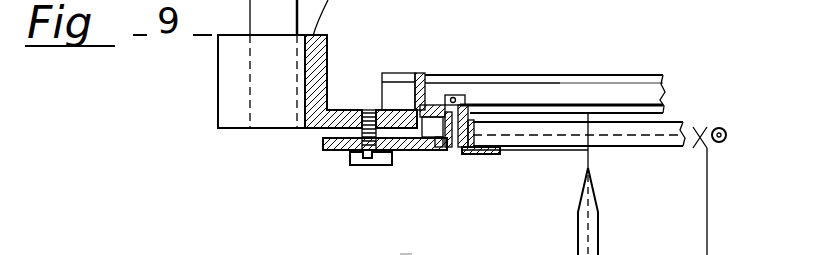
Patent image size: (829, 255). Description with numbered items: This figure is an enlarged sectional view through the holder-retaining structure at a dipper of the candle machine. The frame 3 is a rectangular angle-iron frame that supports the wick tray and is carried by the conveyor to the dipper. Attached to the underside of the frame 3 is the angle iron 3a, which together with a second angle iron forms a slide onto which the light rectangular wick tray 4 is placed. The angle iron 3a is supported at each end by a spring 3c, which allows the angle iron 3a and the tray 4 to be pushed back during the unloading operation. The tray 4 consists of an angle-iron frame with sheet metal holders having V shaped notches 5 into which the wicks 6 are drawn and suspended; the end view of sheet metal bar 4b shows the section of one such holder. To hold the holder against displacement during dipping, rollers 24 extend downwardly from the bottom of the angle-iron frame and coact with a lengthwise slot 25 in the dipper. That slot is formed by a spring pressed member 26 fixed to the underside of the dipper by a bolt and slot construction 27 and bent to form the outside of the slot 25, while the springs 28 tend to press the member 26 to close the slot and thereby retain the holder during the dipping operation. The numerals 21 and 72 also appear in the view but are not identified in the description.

The frame 3 is at (417, 74).
The angle iron 3a is at (498, 111).
The spring 3c is at (478, 103).
The wick tray 4 is at (513, 142).
The end view of sheet metal bar 4b is at (698, 148).
The V shaped notches 5 is at (600, 122).
The wicks 6 is at (707, 240).
The block 21 is at (387, 92).
The rollers 24 is at (442, 144).
The lengthwise slot 25 is at (455, 96).
The spring pressed member 26 is at (457, 144).
The bolt and slot construction 27 is at (355, 163).
The springs 28 is at (323, 142).
The support 72 is at (397, 250).